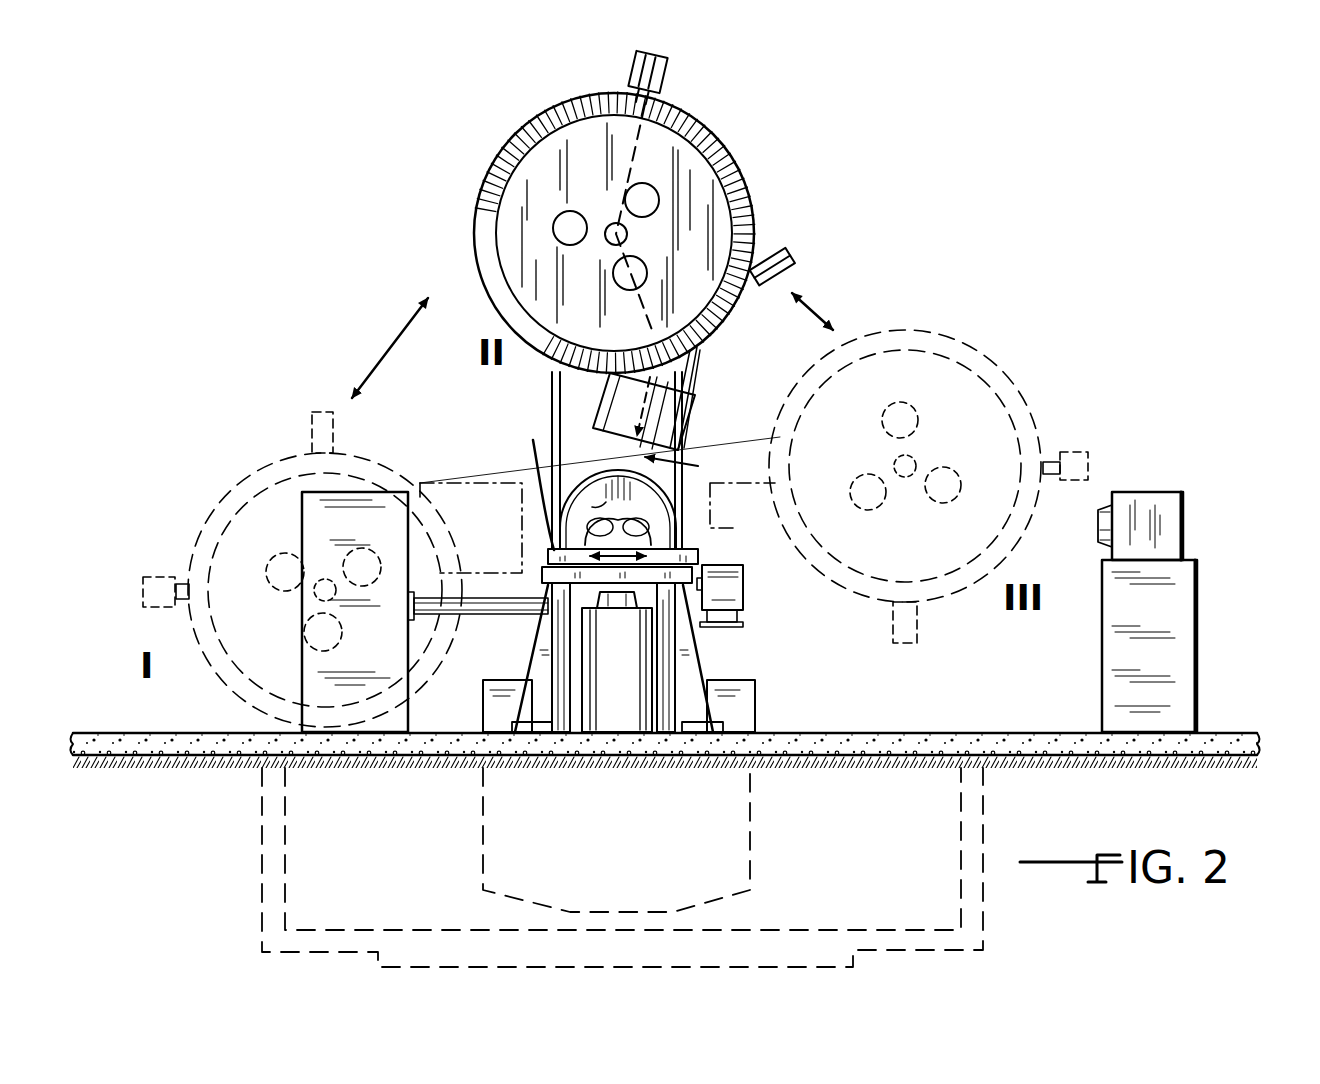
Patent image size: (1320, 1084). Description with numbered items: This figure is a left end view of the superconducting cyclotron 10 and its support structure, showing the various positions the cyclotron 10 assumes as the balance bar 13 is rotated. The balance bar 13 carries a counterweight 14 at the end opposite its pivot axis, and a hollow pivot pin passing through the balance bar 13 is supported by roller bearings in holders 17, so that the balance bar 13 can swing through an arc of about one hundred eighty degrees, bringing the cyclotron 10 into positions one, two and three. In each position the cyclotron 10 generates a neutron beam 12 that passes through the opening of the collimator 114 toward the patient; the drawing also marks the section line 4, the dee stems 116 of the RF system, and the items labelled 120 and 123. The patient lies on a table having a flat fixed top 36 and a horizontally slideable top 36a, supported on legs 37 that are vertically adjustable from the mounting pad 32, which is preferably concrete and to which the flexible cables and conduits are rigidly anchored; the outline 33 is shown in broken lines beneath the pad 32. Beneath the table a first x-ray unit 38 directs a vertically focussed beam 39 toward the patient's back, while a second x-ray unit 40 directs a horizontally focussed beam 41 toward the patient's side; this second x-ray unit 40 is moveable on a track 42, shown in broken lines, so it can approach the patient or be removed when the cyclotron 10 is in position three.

The section line 4- 4 is at (666, 55).
The superconducting cyclotron 10 is at (756, 132).
The neutron beam 12 is at (635, 441).
The balance bar 13 is at (583, 378).
The counterweight 14 is at (757, 690).
The holders 17 is at (545, 658).
The mounting pad 32 is at (152, 742).
The underground pit outline 33 is at (988, 800).
The fixed top 36 is at (744, 588).
The horizontally slideable top 36a is at (530, 474).
The legs 37 is at (563, 632).
The first x-ray unit 38 is at (630, 697).
The beam 39 is at (615, 605).
The second x-ray unit 40 is at (1165, 602).
The beam 41 is at (1097, 524).
The track 42 is at (920, 742).
The collimator 114 is at (727, 482).
The dee stem 116 is at (568, 226).
The sensor 120 is at (668, 80).
The stub / stop 123 is at (786, 262).